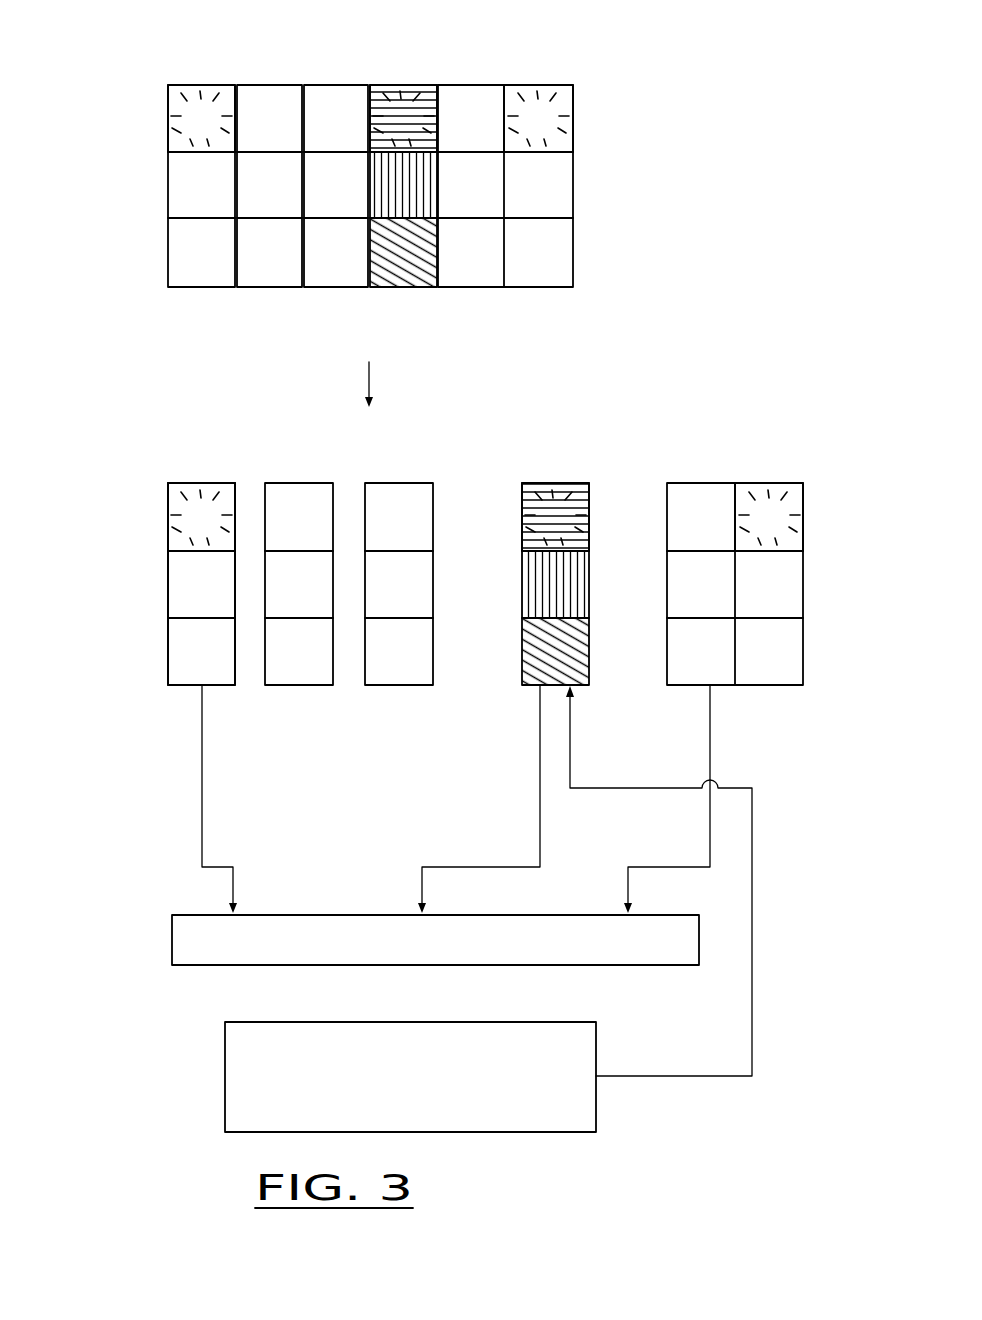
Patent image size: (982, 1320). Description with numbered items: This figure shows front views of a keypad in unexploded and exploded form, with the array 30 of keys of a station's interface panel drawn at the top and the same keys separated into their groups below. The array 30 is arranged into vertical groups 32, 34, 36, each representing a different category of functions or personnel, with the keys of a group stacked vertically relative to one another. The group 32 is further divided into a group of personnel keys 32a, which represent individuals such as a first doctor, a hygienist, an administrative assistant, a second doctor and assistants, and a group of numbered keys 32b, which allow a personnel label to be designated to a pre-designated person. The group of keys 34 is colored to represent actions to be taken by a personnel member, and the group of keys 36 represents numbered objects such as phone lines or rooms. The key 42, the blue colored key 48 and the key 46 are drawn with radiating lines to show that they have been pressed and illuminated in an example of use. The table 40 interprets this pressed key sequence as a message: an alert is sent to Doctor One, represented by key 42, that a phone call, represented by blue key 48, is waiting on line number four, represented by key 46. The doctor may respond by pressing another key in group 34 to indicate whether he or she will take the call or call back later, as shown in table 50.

The array of keys 30 is at (116, 31).
The key group 32 is at (368, 298).
The group of personnel keys 32a is at (185, 688).
The group of numbered keys 32b is at (281, 688).
The group of action keys 34 is at (370, 298).
The group of numbered object keys 36 is at (438, 80).
The table 40 is at (155, 909).
The first doctor key 42 is at (215, 92).
The line number key 46 is at (566, 108).
The blue colored key 48 is at (398, 94).
The response table 50 is at (188, 1034).